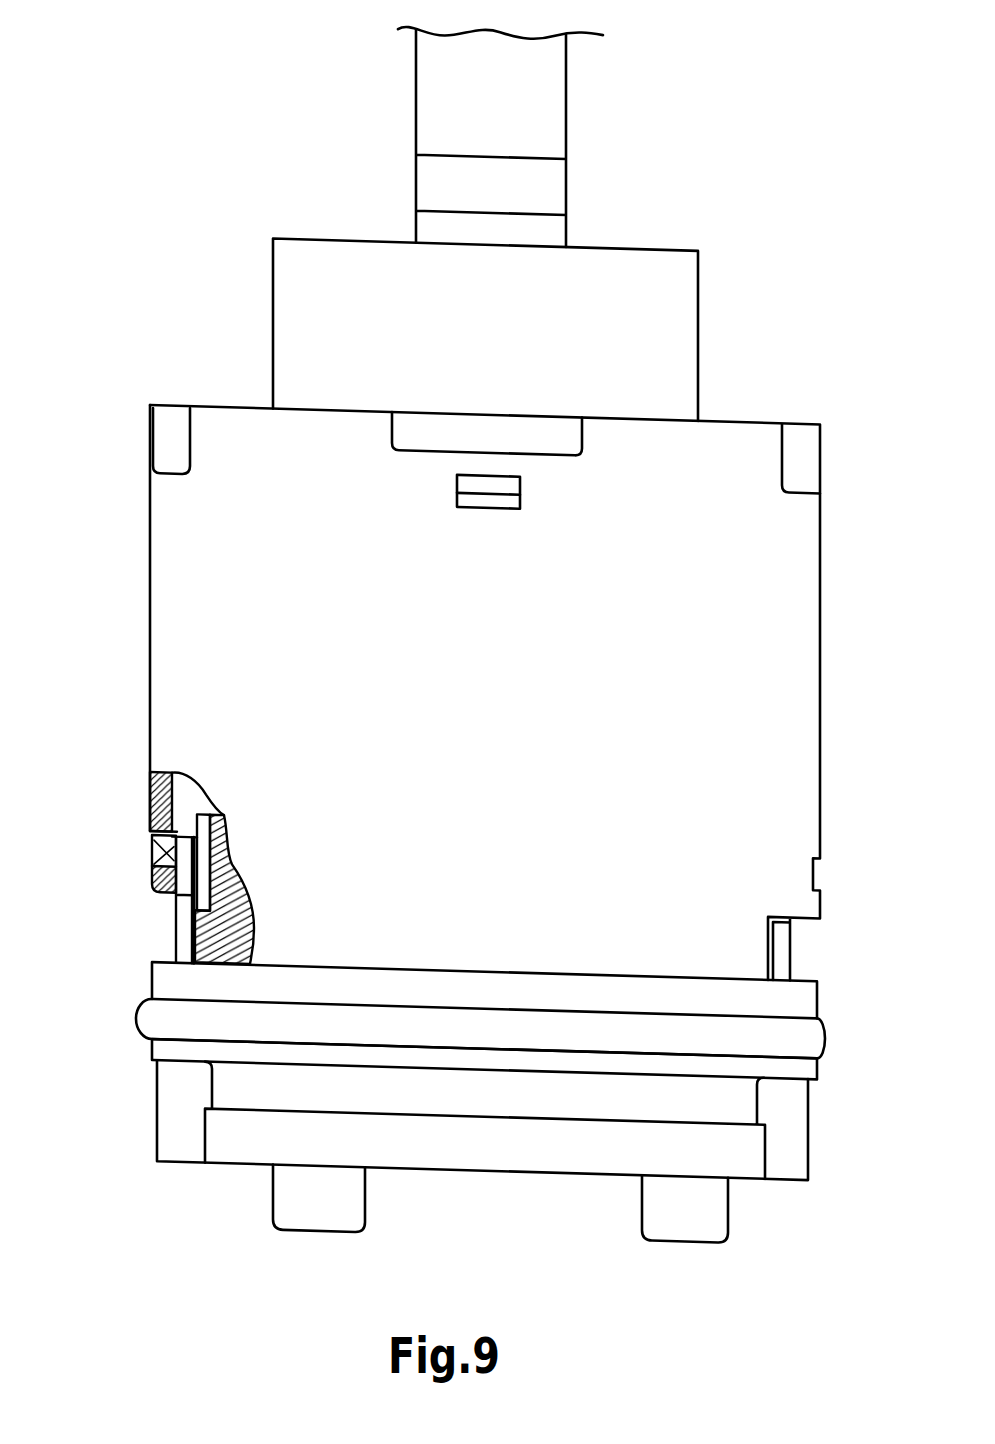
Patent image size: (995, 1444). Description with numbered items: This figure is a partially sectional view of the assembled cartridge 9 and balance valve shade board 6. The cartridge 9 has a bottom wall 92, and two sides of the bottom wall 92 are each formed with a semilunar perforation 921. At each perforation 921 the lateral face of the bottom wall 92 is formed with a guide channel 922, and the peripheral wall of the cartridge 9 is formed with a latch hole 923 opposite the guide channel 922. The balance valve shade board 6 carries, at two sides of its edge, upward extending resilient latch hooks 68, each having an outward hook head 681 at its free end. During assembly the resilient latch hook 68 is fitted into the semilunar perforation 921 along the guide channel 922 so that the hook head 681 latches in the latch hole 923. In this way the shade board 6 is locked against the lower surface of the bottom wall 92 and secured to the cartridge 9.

The cartridge 9 is at (180, 662).
The bottom wall 92 is at (232, 893).
The semilunar perforation 921 is at (185, 823).
The guide channel 922 is at (205, 832).
The latch hole 923 is at (155, 847).
The resilient latch hook 68 is at (180, 922).
The hook head 681 is at (150, 884).
The balance valve shade board 6 is at (258, 1080).